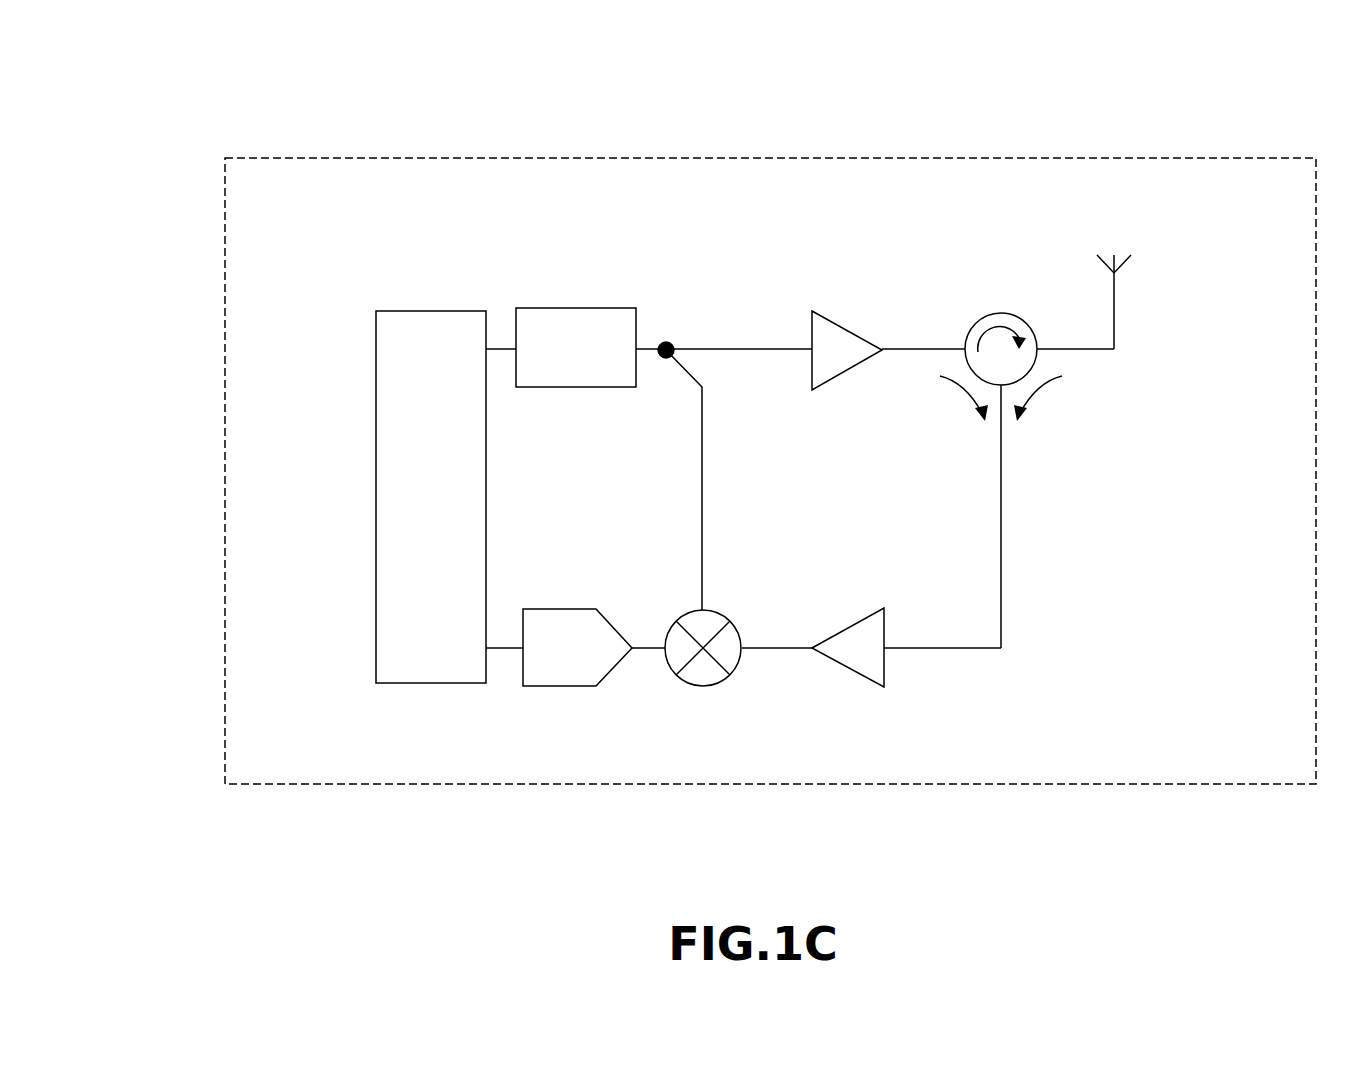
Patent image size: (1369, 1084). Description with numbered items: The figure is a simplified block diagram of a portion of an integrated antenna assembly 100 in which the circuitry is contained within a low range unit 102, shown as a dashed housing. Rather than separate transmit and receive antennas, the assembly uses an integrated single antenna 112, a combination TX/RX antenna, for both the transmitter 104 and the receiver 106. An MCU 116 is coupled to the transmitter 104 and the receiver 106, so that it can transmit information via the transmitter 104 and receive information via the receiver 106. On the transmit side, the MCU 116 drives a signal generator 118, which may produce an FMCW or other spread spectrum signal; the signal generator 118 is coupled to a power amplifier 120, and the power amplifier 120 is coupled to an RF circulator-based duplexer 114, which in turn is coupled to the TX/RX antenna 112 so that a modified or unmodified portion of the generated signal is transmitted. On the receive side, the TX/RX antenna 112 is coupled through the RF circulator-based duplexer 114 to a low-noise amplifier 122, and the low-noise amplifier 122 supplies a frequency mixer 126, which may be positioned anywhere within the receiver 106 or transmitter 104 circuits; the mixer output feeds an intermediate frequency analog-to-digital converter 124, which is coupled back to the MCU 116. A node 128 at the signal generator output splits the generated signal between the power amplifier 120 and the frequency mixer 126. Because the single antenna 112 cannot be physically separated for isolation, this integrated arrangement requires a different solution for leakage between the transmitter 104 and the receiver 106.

The antenna assembly 100 is at (165, 72).
The low range unit 102 is at (285, 158).
The transmitter 104 is at (765, 295).
The receiver 106 is at (787, 668).
The integrated single antenna 112 is at (1114, 300).
The RF circulator-based duplexer 114 is at (1001, 313).
The MCU 116 is at (430, 311).
The signal generator 118 is at (575, 308).
The power amplifier 120 is at (843, 375).
The low-noise amplifier 122 is at (845, 667).
The analog-to-digital converter 124 is at (575, 686).
The frequency mixer 126 is at (700, 687).
The node / splitter 128 is at (665, 342).